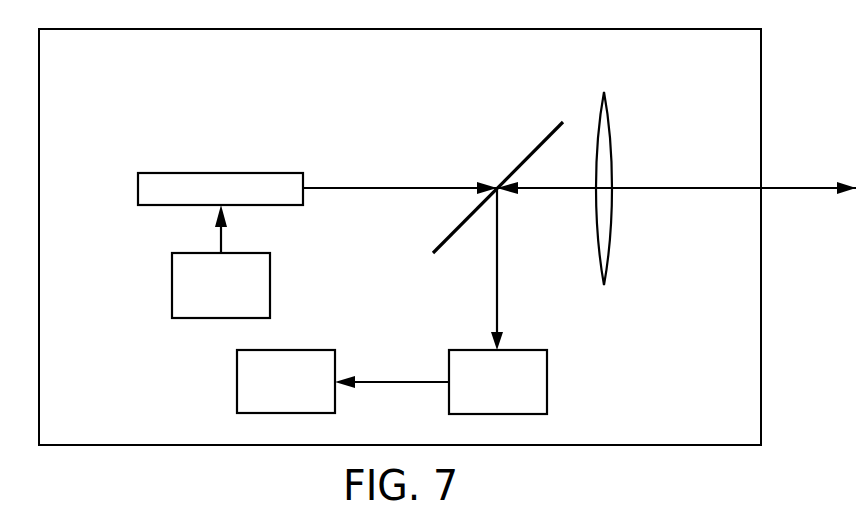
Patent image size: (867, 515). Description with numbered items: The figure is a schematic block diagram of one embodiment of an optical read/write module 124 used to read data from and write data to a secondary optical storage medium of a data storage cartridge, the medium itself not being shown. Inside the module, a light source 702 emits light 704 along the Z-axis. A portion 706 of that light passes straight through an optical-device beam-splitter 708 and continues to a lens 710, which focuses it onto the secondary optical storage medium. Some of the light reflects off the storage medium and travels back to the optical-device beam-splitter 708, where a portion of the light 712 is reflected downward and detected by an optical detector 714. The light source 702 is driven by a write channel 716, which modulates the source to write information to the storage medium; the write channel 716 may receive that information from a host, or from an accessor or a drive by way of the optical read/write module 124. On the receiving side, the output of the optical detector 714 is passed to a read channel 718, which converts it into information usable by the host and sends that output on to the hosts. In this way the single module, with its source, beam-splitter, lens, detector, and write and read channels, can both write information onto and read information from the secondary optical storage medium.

The optical read/write module 124 is at (442, 84).
The light source 702 is at (220, 173).
The light 704 is at (388, 187).
The portion of light 706 is at (730, 187).
The optical-device beam-splitter 708 is at (530, 160).
The lens 710 is at (612, 240).
The reflected light 712 is at (497, 287).
The optical detector 714 is at (547, 382).
The write channel 716 is at (172, 288).
The read channel 718 is at (237, 388).